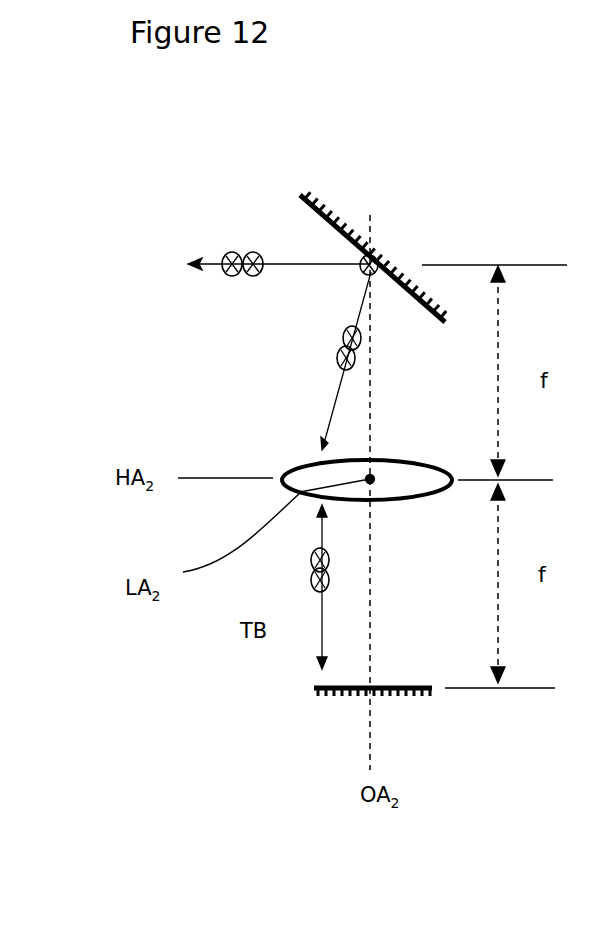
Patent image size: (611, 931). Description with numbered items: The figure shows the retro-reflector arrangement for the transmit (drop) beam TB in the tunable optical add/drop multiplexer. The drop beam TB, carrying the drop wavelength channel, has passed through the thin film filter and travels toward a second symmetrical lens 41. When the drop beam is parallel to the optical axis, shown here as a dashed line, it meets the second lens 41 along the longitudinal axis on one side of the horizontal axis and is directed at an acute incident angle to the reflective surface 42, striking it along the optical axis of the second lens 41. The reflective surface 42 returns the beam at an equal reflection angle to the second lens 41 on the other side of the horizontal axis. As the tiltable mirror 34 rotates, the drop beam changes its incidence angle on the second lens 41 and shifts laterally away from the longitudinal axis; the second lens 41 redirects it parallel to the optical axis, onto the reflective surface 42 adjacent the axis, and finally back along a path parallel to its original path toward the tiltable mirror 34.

The tiltable mirror 34 is at (325, 212).
The second symmetrical lens 41 is at (300, 468).
The reflective surface 42 is at (330, 696).